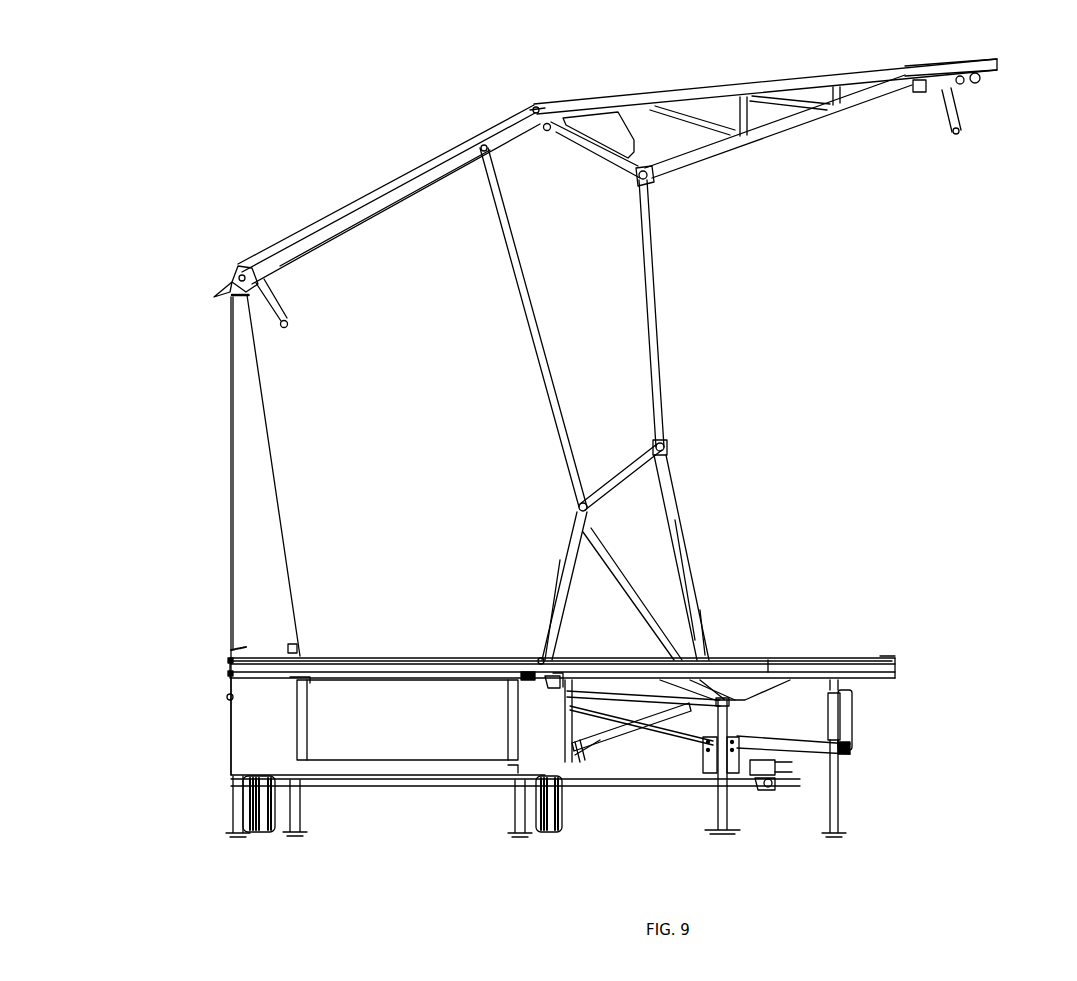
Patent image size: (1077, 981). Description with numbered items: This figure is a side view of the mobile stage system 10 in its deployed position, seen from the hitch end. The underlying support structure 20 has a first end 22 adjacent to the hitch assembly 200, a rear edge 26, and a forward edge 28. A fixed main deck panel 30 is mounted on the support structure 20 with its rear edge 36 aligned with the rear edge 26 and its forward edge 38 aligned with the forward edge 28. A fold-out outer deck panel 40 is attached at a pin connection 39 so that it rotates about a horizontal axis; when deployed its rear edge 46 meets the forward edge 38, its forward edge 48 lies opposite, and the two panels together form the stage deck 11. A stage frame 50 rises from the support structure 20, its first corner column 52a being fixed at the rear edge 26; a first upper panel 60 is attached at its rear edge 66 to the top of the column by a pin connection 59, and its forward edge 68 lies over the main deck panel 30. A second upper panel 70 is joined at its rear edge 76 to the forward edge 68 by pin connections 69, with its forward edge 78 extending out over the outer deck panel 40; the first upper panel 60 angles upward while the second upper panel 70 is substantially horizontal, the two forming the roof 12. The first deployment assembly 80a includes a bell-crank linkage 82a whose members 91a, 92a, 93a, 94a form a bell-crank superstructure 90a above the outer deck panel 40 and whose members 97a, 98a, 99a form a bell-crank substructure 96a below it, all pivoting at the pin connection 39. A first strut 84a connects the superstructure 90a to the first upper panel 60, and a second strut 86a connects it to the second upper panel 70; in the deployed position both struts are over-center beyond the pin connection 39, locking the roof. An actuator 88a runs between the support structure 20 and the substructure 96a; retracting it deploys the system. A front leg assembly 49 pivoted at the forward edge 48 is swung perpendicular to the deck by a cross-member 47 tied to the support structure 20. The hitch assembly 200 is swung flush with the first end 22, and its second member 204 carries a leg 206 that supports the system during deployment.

The mobile stage system 10 is at (186, 139).
The stage deck 11 is at (445, 656).
The roof 12 is at (466, 136).
The support structure 20 is at (144, 781).
The first end 22 is at (247, 704).
The rear edge 26 is at (231, 674).
The forward edge 28 is at (598, 702).
The main deck panel 30 is at (373, 656).
The rear edge 36 is at (231, 661).
The forward edge 38 is at (522, 672).
The pin connection 39 is at (540, 661).
The outer deck panel 40 is at (768, 658).
The rear edge 46 is at (553, 660).
The cross-member 47 is at (837, 745).
The forward edge 48 is at (898, 660).
The front leg assembly 49 is at (852, 722).
The stage frame 50 is at (231, 492).
The first corner column 52a is at (231, 405).
The pin connection 59 is at (222, 290).
The first upper panel 60 is at (368, 190).
The rear edge 66 is at (240, 263).
The forward edge 68 is at (533, 108).
The pin connections 69 is at (546, 131).
The second upper panel 70 is at (704, 80).
The rear edge 76 is at (546, 106).
The forward edge 78 is at (996, 64).
The first deployment assembly 80a is at (572, 526).
The bell-crank linkage 82a is at (695, 553).
The first strut 84a is at (520, 326).
The second strut 86a is at (665, 302).
The actuator 88a is at (600, 744).
The bell-crank superstructure 90a is at (680, 506).
The member 91a is at (622, 462).
The member 92a is at (565, 556).
The member 93a is at (628, 590).
The member 94a is at (700, 592).
The bell-crank substructure 96a is at (742, 674).
The member 97a is at (660, 674).
The member 98a is at (722, 680).
The member 99a is at (728, 676).
The hitch assembly 200 is at (700, 858).
The second member 204 is at (700, 776).
The leg 206 is at (727, 790).